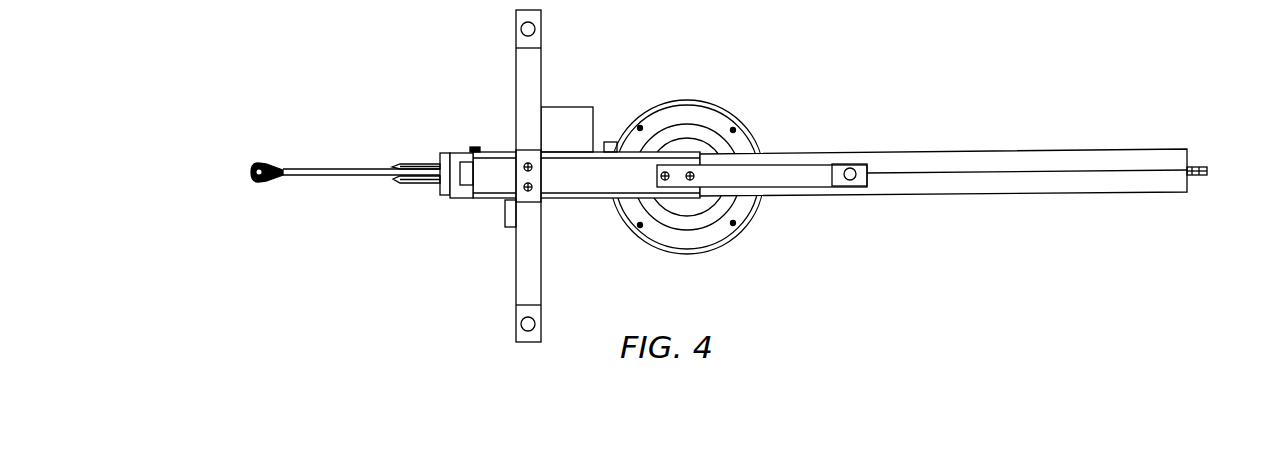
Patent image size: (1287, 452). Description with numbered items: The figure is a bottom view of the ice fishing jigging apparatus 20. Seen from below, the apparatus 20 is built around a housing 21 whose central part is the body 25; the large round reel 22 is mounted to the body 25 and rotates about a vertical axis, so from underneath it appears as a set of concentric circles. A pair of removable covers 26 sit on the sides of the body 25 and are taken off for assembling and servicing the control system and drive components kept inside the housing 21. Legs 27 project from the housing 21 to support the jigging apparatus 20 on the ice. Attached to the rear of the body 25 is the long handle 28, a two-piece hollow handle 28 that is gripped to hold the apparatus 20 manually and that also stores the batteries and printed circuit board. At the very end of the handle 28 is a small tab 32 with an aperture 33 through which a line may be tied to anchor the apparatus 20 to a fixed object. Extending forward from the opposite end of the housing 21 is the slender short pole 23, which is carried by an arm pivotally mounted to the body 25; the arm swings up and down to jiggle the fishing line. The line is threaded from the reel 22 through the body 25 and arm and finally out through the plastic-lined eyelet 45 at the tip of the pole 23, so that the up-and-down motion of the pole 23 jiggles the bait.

The ice fishing jigging apparatus 20 is at (900, 294).
The housing 21 is at (589, 90).
The reel 22 is at (687, 201).
The slender short pole 23 is at (361, 203).
The body 25 is at (605, 188).
The removable covers 26 is at (633, 177).
The legs 27 is at (652, 176).
The handle 28 is at (1053, 149).
The tab 32 is at (1225, 143).
The aperture 33 is at (1222, 203).
The eyelet 45 is at (243, 194).